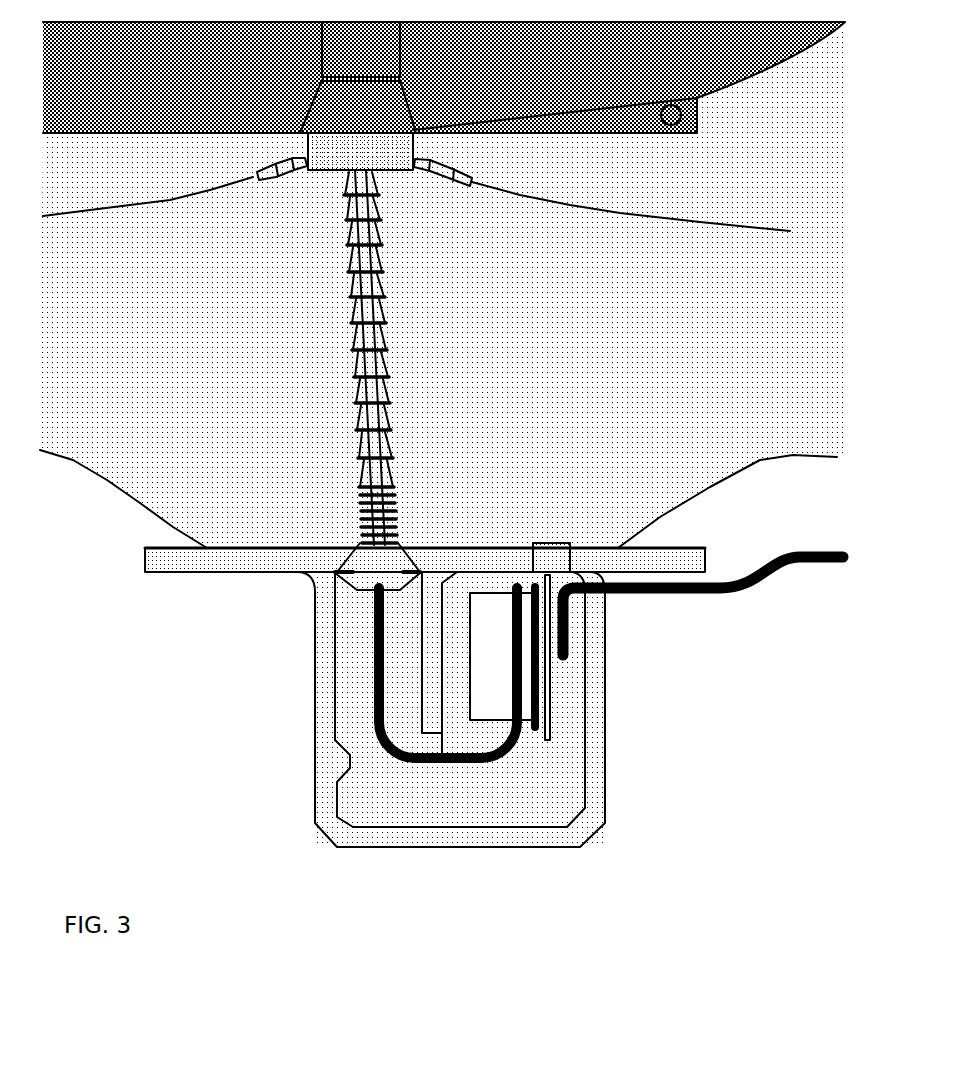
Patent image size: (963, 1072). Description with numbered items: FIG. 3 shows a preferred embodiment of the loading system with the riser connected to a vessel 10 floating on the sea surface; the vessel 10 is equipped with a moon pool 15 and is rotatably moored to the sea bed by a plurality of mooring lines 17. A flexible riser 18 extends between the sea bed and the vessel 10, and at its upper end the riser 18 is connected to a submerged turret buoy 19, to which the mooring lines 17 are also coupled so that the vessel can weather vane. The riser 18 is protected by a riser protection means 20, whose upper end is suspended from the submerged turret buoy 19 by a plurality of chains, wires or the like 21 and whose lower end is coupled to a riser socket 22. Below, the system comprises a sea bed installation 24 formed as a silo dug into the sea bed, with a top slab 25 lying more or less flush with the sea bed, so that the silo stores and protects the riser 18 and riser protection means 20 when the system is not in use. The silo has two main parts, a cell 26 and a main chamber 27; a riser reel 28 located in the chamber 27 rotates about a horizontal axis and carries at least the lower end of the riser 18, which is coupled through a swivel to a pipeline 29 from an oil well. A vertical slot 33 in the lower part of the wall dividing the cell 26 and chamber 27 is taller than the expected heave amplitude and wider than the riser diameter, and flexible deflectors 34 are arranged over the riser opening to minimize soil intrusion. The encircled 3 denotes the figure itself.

The section indicator 3 is at (671, 115).
The vessel 10 is at (162, 103).
The moon pool 15 is at (347, 45).
The mooring lines 17 is at (170, 200).
The flexible riser 18 is at (383, 335).
The submerged turret buoy 19 is at (328, 153).
The riser protection means 20 is at (393, 375).
The chains, wires or the like 21 is at (400, 417).
The riser socket 22 is at (397, 558).
The sea bed installation 24 is at (593, 793).
The top slab 25 is at (582, 558).
The cell 26 is at (353, 685).
The main chamber 27 is at (477, 583).
The riser reel 28 is at (492, 650).
The pipeline 29 is at (727, 592).
The vertical slot 33 is at (432, 735).
The flexible deflectors 34 is at (447, 548).